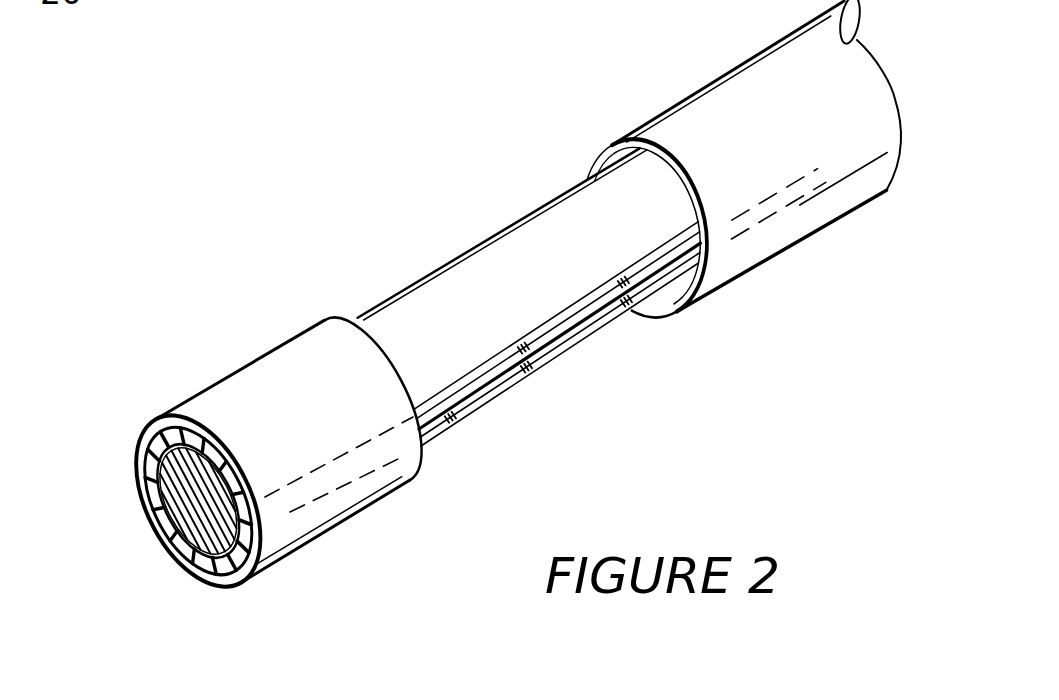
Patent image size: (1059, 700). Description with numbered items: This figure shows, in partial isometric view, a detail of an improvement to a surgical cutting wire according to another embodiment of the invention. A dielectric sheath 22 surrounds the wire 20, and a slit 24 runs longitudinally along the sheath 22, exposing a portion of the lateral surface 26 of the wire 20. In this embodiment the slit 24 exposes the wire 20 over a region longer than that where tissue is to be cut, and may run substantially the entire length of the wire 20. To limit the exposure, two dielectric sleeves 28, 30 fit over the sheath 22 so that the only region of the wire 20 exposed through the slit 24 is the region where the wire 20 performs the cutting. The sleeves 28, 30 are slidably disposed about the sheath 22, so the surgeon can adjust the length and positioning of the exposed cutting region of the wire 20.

The wire 20 is at (203, 492).
The dielectric sheath 22 is at (152, 455).
The slit 24 is at (547, 340).
The lateral surface 26 is at (483, 383).
The dielectric sleeve 28 is at (237, 382).
The dielectric sleeve 30 is at (676, 120).